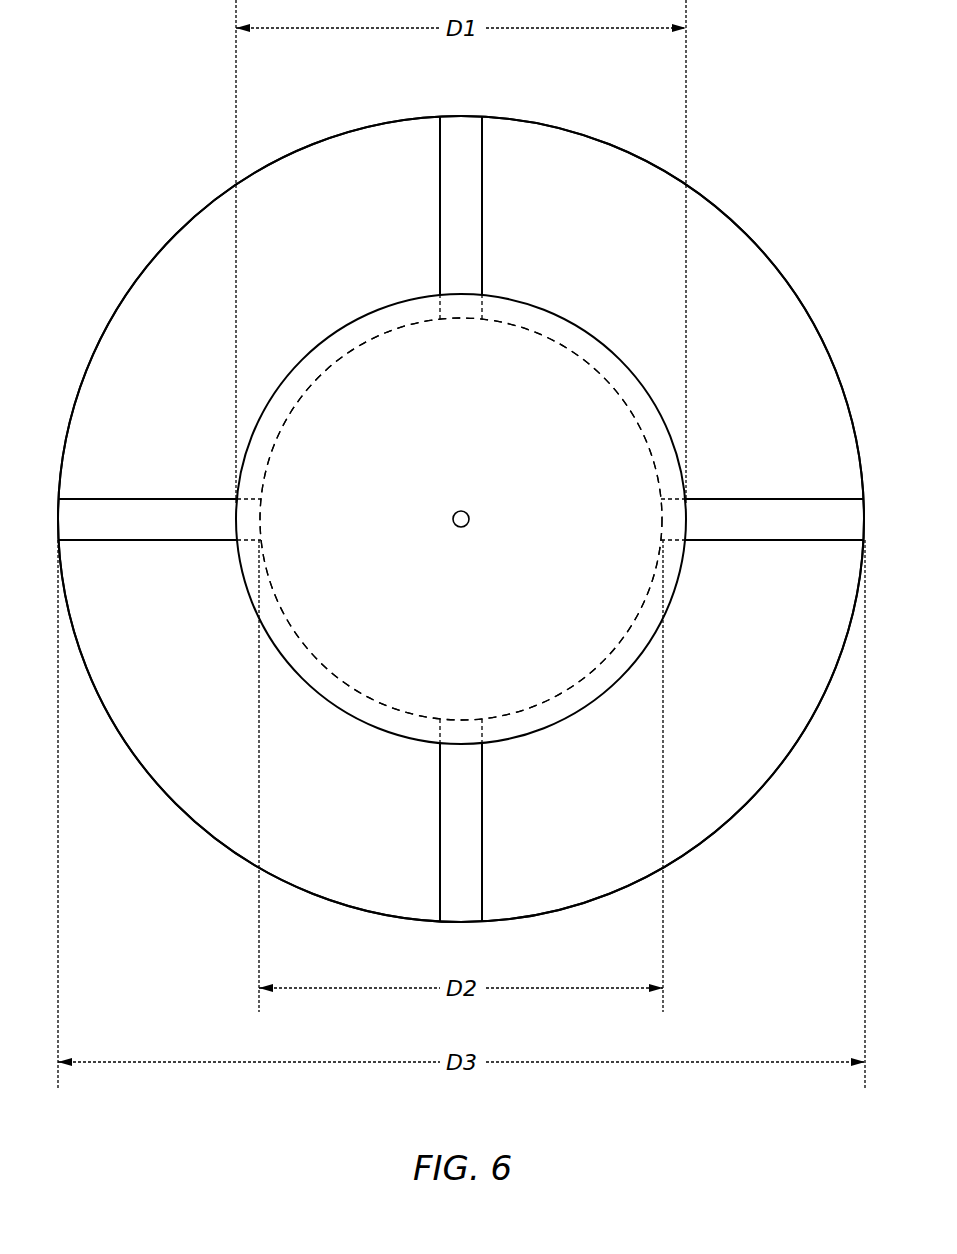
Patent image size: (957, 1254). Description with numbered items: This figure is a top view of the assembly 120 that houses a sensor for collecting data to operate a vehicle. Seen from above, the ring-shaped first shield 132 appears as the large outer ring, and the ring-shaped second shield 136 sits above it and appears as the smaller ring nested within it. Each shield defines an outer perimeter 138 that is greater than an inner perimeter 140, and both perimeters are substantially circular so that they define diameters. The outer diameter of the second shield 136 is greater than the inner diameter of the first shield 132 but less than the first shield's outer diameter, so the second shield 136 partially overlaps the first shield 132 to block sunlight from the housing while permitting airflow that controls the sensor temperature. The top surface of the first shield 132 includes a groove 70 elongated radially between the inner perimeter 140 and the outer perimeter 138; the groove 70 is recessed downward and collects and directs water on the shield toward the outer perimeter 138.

The assembly 120 is at (773, 117).
The first shield 132 is at (145, 315).
The outer perimeter 138 is at (412, 297).
The inner perimeter 140 is at (555, 337).
The second shield 136 is at (385, 652).
The groove 70 is at (465, 155).